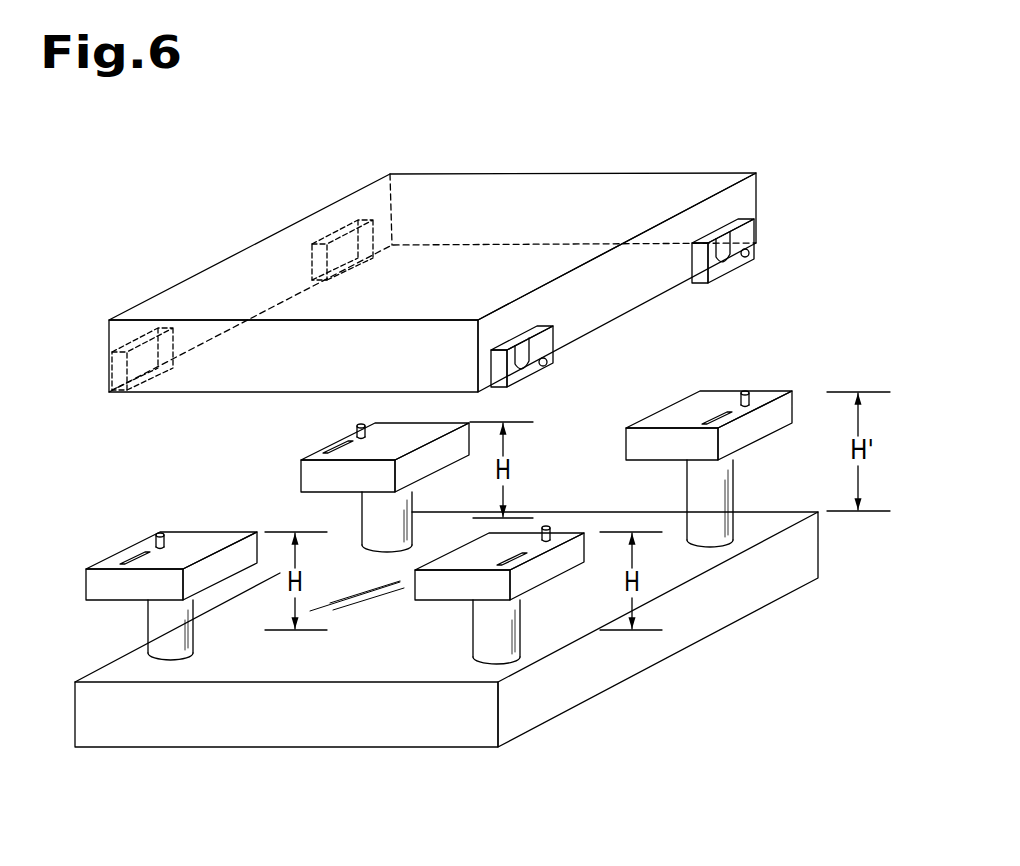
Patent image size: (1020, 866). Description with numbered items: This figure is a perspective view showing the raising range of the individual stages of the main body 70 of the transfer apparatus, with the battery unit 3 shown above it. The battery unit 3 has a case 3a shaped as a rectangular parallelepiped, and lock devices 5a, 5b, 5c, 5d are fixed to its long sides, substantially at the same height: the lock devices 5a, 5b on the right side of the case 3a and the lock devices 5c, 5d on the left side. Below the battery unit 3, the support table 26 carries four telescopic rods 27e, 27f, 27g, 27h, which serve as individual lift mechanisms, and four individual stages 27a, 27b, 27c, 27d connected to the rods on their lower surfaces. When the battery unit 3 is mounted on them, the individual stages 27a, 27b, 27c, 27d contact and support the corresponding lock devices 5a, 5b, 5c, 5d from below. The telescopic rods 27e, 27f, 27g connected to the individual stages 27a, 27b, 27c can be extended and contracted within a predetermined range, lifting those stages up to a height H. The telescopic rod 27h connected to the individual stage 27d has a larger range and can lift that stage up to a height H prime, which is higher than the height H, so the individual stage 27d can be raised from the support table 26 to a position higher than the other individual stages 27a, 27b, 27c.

The battery unit 3 is at (432, 255).
The case 3a is at (600, 180).
The lock device 5a is at (128, 330).
The lock device 5b is at (352, 215).
The lock device 5c is at (483, 357).
The lock device 5d is at (740, 207).
The support table 26 is at (727, 600).
The individual stage 27a is at (141, 536).
The individual stage 27b is at (350, 445).
The individual stage 27c is at (516, 560).
The individual stage 27d is at (686, 407).
The telescopic rod 27e is at (181, 618).
The telescopic rod 27f is at (397, 541).
The telescopic rod 27g is at (485, 615).
The telescopic rod 27h is at (727, 469).
The main body 70 is at (570, 736).